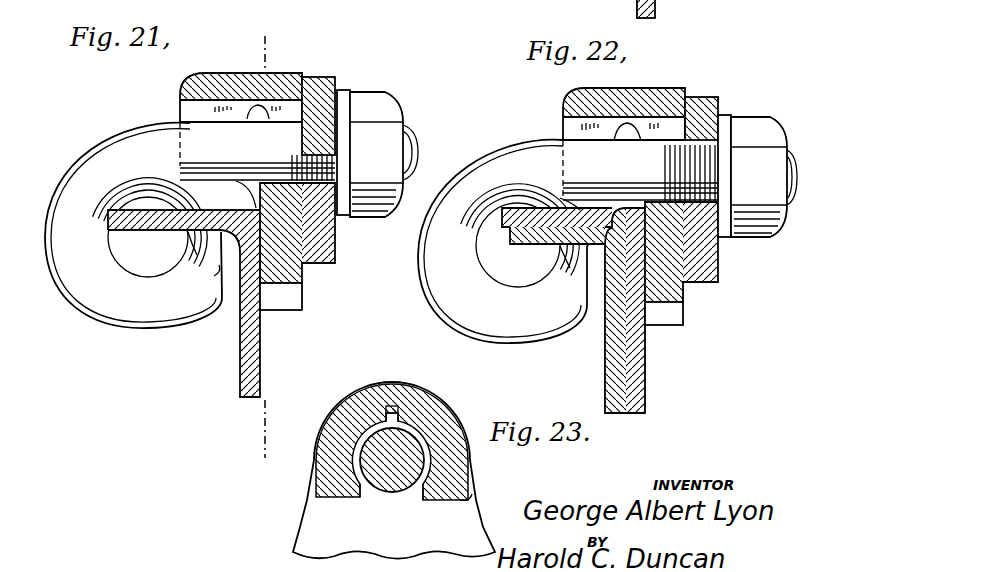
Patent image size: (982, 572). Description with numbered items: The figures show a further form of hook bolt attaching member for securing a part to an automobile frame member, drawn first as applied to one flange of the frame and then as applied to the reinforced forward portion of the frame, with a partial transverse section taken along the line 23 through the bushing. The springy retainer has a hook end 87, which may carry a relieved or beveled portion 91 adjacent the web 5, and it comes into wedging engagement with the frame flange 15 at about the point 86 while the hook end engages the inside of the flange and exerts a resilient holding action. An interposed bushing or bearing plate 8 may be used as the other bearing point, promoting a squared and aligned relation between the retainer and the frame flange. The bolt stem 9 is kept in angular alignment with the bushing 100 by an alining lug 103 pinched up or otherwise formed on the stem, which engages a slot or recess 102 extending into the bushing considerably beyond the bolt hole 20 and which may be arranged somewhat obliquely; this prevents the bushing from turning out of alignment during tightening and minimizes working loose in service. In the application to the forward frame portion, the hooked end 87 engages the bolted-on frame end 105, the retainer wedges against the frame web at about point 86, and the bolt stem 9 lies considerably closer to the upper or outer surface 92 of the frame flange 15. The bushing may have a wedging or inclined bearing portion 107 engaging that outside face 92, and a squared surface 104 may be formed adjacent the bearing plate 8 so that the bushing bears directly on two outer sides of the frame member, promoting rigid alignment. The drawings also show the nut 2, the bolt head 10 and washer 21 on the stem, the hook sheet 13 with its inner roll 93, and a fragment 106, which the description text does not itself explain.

In FIG. 21, the nut 2 is at (330, 83).
In FIG. 22, the nut 2 is at (701, 101).
In FIG. 21, the web 5 is at (262, 353).
In FIG. 22, the web 5 is at (647, 354).
In FIG. 21, the bushing or bearing plate 8 is at (300, 281).
In FIG. 22, the bushing or bearing plate 8 is at (680, 304).
In FIG. 23, the bushing or bearing plate 8 is at (327, 533).
In FIG. 21, the bolt stem 9 is at (408, 141).
In FIG. 22, the bolt stem 9 is at (692, 168).
In FIG. 23, the bolt stem 9 is at (386, 488).
In FIG. 21, the bolt head 10 is at (383, 109).
In FIG. 22, the bolt head 10 is at (763, 232).
In FIG. 21, the hook sheet 13 is at (87, 285).
In FIG. 22, the hook sheet 13 is at (442, 289).
In FIG. 21, the frame flange 15 is at (167, 214).
In FIG. 22, the frame flange 15 is at (504, 219).
In FIG. 23, the bolt hole 20 is at (360, 441).
In FIG. 21, the washer 21 is at (344, 97).
In FIG. 22, the washer 21 is at (720, 238).
In FIG. 21, the section line 23 is at (254, 59).
In FIG. 21, the wedging point 86 is at (105, 193).
In FIG. 22, the wedging point 86 is at (492, 200).
In FIG. 21, the hook end 87 is at (191, 236).
In FIG. 22, the hook end 87 is at (572, 249).
In FIG. 21, the relieved or beveled portion 91 is at (214, 274).
In FIG. 21, the outer surface of the frame flange 92 is at (221, 272).
In FIG. 22, the outer surface of the frame flange 92 is at (610, 258).
In FIG. 21, the inner roll 93 is at (127, 262).
In FIG. 22, the inner roll 93 is at (500, 281).
In FIG. 21, the bushing 100 is at (197, 76).
In FIG. 22, the bushing 100 is at (588, 98).
In FIG. 23, the bushing 100 is at (383, 390).
In FIG. 21, the slot or recess 102 is at (192, 109).
In FIG. 22, the slot or recess 102 is at (577, 128).
In FIG. 23, the slot or recess 102 is at (386, 409).
In FIG. 21, the alining lug 103 is at (256, 119).
In FIG. 22, the alining lug 103 is at (629, 141).
In FIG. 23, the alining lug 103 is at (398, 409).
In FIG. 21, the squared surface 104 is at (298, 167).
In FIG. 22, the squared surface 104 is at (614, 232).
In FIG. 23, the squared surface 104 is at (473, 501).
In FIG. 22, the frame end 105 is at (547, 243).
In FIG. 22, the fragment 106 is at (574, 9).
In FIG. 21, the wedging or inclined bearing portion 107 is at (245, 187).
In FIG. 22, the wedging or inclined bearing portion 107 is at (560, 197).